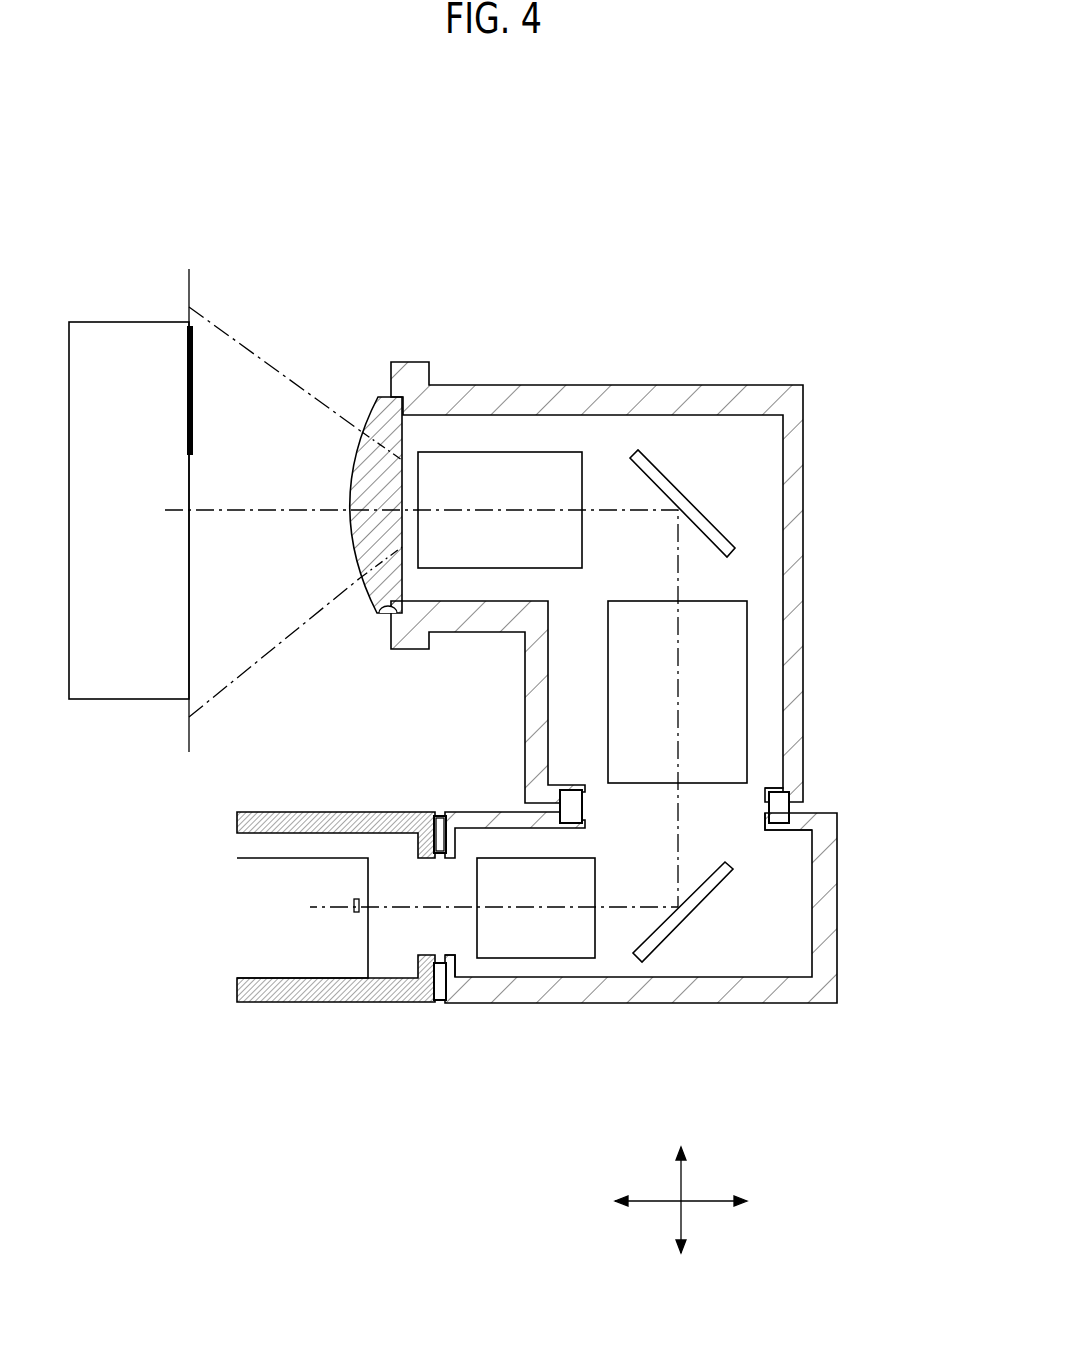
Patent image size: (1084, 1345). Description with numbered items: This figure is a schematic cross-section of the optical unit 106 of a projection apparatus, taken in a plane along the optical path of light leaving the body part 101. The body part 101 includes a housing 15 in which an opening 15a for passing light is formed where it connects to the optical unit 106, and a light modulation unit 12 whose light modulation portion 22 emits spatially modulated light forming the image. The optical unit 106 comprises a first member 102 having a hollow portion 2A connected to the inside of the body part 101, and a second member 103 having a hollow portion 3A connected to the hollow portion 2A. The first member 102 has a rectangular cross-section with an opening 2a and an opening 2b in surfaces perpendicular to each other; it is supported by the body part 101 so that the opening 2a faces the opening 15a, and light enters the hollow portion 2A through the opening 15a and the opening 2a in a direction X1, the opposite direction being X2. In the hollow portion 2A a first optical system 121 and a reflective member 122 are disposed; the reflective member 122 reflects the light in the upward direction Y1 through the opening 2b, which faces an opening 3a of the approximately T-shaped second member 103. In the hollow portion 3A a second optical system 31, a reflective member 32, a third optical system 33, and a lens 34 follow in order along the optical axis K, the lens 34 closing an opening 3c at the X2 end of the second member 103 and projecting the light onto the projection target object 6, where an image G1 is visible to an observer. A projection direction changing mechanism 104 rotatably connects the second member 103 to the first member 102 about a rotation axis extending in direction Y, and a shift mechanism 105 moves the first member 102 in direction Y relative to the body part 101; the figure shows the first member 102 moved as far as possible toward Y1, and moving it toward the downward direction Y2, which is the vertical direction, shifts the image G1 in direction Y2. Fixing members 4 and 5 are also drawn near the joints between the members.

The optical unit 106 is at (817, 358).
The second member 103 is at (803, 509).
The hollow portion 3A is at (597, 697).
The lens 34 is at (357, 560).
The opening 3c is at (373, 613).
The third optical system 33 is at (503, 452).
The reflective member 32 is at (633, 453).
The second optical system 31 is at (729, 671).
The optical axis K is at (257, 508).
The projection target object 6 is at (128, 322).
The image G1 is at (187, 411).
The opening 3a is at (768, 789).
The fixing member 4 is at (789, 816).
The projection direction changing mechanism 104 is at (563, 792).
The first member 102 is at (830, 998).
The hollow portion 2A is at (799, 969).
The opening 2b is at (760, 826).
The opening 2a is at (458, 946).
The housing 15 is at (383, 993).
The body part 101 is at (290, 1003).
The opening 15a is at (432, 863).
The fixing member 5 is at (438, 816).
The shift mechanism 105 is at (436, 1002).
The light modulation unit 12 is at (248, 905).
The light modulation portion 22 is at (360, 899).
The first optical system 121 is at (497, 946).
The reflective member 122 is at (636, 958).
The direction Y1 is at (680, 1181).
The direction Y2 is at (681, 1267).
The direction X1 is at (698, 1201).
The direction X2 is at (603, 1201).